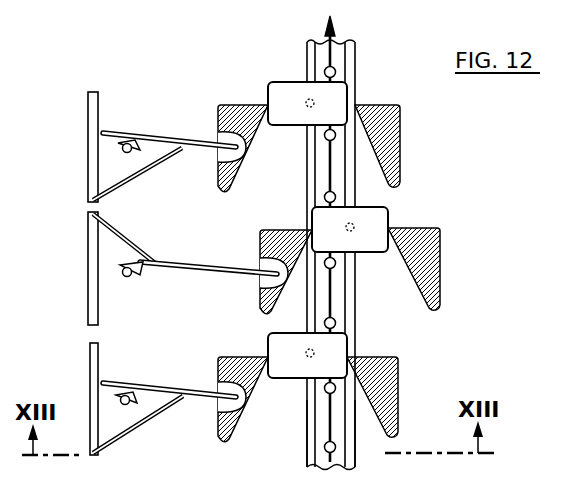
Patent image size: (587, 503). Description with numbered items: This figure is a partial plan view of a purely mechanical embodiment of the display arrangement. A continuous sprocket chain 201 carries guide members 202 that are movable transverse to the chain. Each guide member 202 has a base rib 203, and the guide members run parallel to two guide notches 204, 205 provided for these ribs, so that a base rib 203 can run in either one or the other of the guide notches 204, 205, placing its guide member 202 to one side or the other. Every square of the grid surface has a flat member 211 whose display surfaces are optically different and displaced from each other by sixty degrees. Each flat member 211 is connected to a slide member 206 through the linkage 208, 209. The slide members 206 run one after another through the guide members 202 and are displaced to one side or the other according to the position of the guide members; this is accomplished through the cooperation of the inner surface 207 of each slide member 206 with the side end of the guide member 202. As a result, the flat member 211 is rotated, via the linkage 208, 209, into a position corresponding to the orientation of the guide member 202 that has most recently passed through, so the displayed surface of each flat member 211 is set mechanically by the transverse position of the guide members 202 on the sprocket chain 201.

The continuous sprocket chain 201 is at (345, 59).
The guide member 202 is at (288, 91).
The base rib 203 is at (310, 352).
The guide notch 204 is at (308, 453).
The guide notch 205 is at (352, 455).
The slide member 206 is at (400, 142).
The inner surface 207 is at (253, 143).
The linkage 208 is at (161, 139).
The linkage 209 is at (131, 155).
The flat member 211 is at (88, 140).